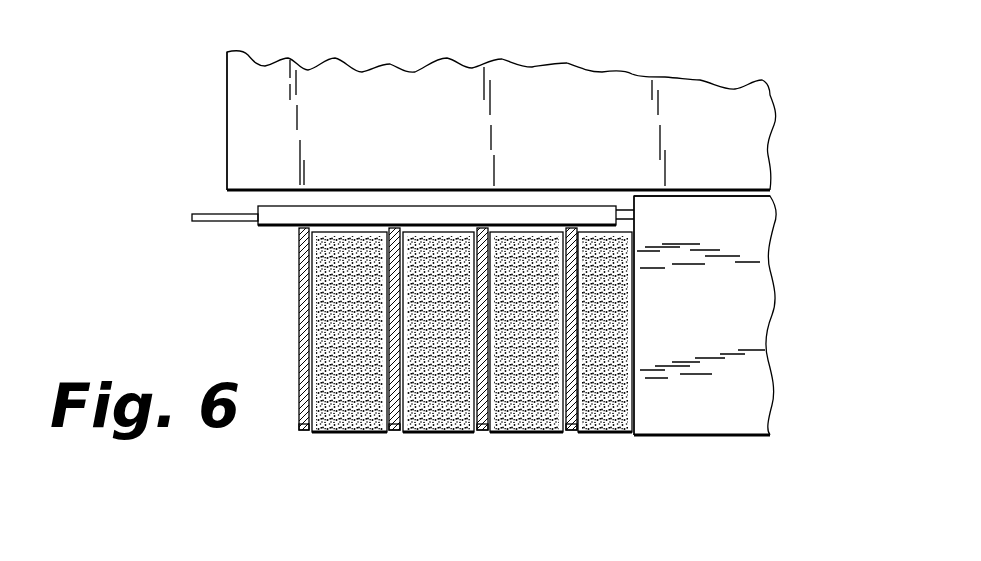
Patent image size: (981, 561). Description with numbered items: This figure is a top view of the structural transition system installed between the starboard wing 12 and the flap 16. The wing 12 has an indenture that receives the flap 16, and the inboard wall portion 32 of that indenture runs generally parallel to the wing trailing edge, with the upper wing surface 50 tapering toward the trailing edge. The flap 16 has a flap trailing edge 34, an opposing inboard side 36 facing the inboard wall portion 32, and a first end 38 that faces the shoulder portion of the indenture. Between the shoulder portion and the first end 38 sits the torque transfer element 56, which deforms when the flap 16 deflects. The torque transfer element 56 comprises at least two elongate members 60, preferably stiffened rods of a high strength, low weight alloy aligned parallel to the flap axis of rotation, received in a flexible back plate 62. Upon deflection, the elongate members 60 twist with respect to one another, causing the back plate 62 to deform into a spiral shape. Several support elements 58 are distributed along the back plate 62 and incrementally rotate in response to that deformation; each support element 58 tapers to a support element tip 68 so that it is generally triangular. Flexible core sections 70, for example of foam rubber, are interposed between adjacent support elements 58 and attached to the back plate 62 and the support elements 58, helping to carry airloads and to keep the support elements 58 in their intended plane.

The starboard wing 12 is at (560, 108).
The flap 16 is at (700, 339).
The inboard wall portion 32 is at (614, 193).
The flap trailing edge 34 is at (703, 437).
The inboard side 36 is at (707, 210).
The first end 38 is at (642, 344).
The upper wing surface 50 is at (235, 112).
The torque transfer element 56 is at (254, 232).
The support elements 58 is at (394, 229).
The elongate members 60 is at (197, 213).
The flexible back plate 62 is at (289, 230).
The support element tip 68 is at (304, 432).
The flexible core section 70 is at (355, 242).